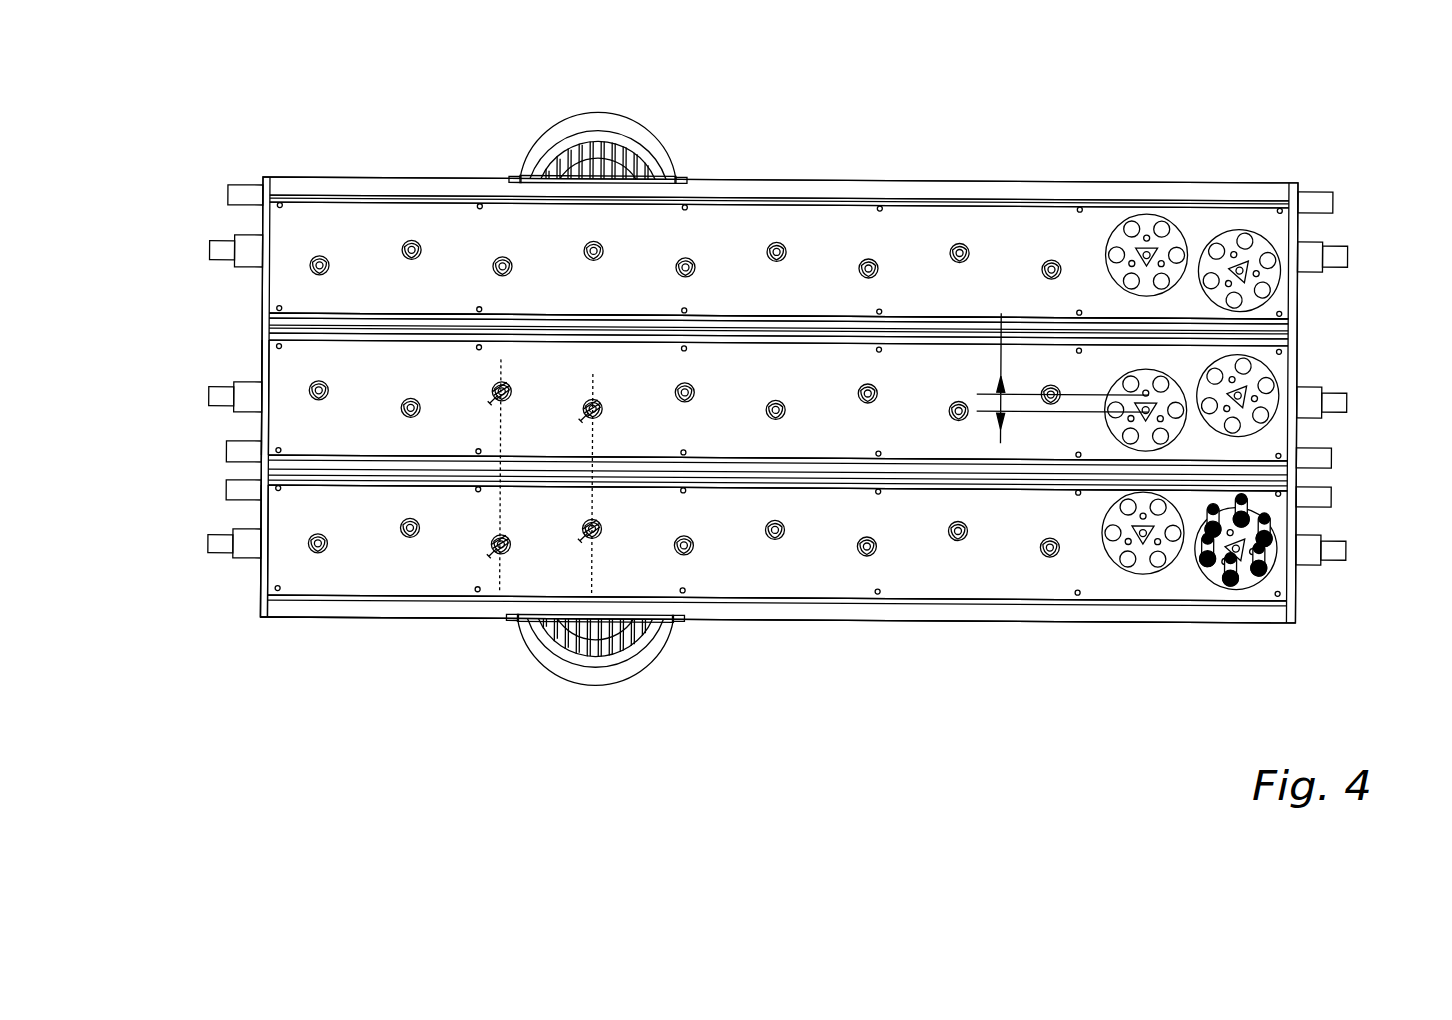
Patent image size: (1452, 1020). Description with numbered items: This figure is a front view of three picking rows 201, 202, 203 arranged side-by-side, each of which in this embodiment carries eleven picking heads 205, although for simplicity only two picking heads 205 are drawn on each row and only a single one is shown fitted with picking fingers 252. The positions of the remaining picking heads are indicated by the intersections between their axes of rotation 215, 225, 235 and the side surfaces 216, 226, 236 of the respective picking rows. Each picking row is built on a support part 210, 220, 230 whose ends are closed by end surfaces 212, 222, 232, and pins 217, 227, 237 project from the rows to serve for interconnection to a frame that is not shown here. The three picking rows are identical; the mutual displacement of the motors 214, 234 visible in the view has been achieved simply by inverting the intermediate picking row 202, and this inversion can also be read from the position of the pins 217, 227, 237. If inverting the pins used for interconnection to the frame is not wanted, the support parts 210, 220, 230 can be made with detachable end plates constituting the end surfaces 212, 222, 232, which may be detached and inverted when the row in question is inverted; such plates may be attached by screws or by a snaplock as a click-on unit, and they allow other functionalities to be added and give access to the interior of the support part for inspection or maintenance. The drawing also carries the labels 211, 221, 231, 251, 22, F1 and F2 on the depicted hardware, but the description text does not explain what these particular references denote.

The picking row 201 is at (888, 178).
The picking row 202 is at (815, 314).
The picking row 203 is at (812, 626).
The picking head 205 is at (1252, 597).
The support part 210 is at (1022, 228).
The connector of first module 211 is at (1338, 262).
The end surface 212 is at (262, 213).
The motor 214 is at (640, 152).
The axis of rotation 215 is at (502, 250).
The side surface 216 is at (452, 240).
The pin 217 is at (1318, 204).
The support part 220 is at (906, 378).
The connector of second module 221 is at (1340, 401).
The end surface 222 is at (260, 433).
The axis of rotation 225 is at (312, 386).
The side surface 226 is at (357, 380).
The pin 227 is at (1332, 458).
The support part 230 is at (918, 556).
The connector of third module 231 is at (1342, 552).
The end surface 232 is at (260, 569).
The motor 234 is at (618, 663).
The axis of rotation 235 is at (316, 558).
The side surface 236 is at (362, 548).
The pin 237 is at (1332, 498).
The lamp holder disc 251 is at (1145, 562).
The picking fingers 252 is at (1268, 540).
The offset distance 22 is at (1055, 378).
The force F1 is at (517, 476).
The force F2 is at (617, 484).